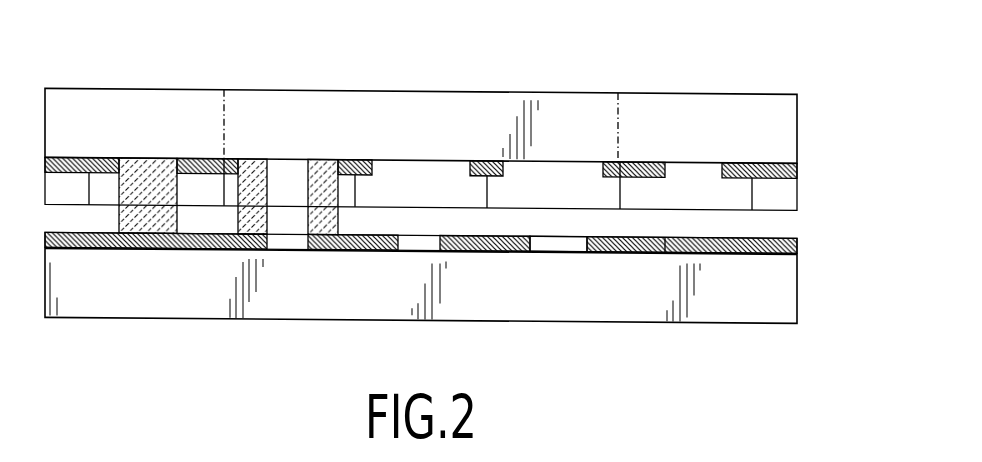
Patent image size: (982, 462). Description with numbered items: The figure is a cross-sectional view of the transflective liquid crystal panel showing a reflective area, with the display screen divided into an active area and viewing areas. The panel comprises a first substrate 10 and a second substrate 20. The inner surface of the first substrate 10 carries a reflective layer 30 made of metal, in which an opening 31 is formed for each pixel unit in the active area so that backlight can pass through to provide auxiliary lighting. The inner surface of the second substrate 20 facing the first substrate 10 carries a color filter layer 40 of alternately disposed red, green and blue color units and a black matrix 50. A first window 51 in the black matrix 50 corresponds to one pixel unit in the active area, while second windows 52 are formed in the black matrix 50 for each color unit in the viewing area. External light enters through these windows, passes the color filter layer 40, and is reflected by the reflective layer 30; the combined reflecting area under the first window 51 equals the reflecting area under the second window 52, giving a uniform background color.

The first substrate 10 is at (203, 315).
The second substrate 20 is at (522, 84).
The reflective layer 30 is at (800, 238).
The opening 31 is at (588, 247).
The color filter layer 40 is at (798, 192).
The black matrix 50 is at (800, 161).
The first window 51 is at (376, 158).
The second window 52 is at (126, 157).